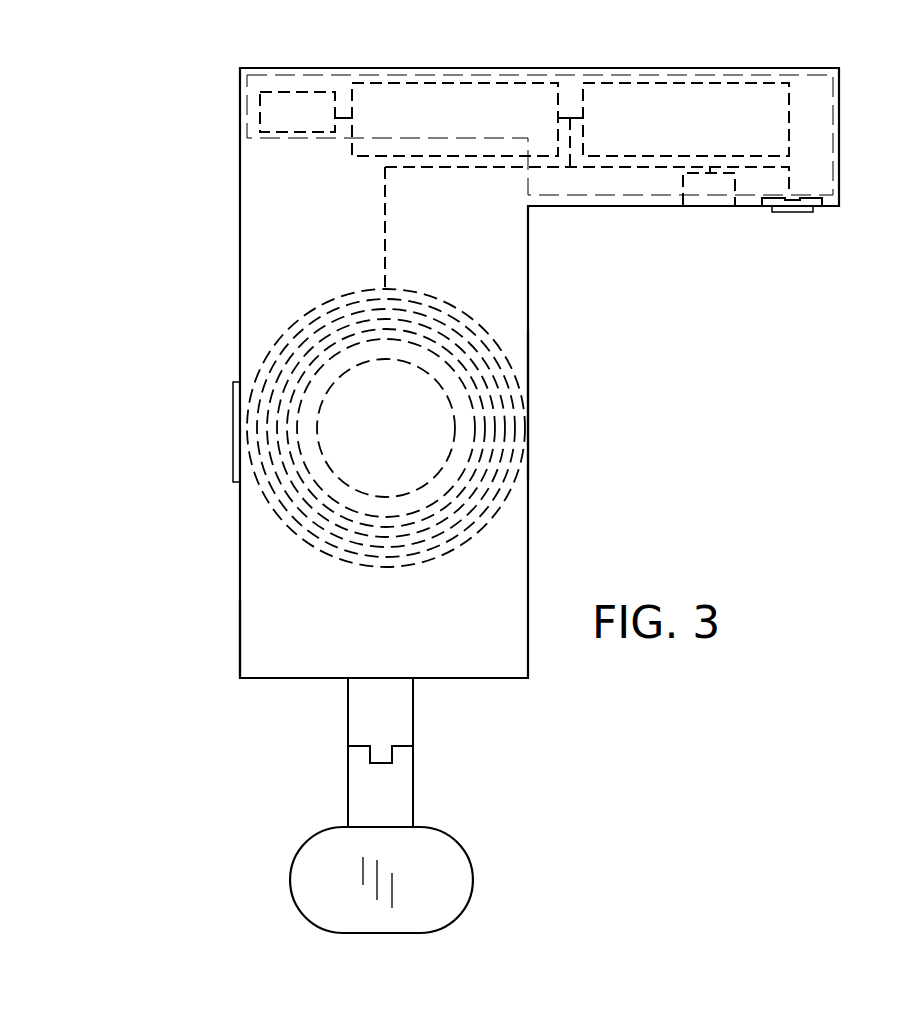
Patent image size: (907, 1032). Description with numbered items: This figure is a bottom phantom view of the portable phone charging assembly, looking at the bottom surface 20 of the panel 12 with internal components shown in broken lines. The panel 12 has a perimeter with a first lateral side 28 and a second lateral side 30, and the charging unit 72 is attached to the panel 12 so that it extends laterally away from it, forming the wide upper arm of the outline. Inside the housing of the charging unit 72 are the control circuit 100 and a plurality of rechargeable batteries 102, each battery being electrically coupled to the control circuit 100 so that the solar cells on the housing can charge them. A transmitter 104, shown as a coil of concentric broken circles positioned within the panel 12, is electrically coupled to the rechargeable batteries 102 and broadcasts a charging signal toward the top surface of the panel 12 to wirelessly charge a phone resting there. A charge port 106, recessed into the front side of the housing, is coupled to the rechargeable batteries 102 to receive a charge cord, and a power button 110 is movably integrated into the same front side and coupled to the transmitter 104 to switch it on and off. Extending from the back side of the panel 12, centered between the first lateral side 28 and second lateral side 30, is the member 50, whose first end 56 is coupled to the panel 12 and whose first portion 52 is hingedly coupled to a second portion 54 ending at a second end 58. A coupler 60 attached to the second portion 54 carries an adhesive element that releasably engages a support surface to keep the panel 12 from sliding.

The panel 12 is at (240, 678).
The bottom surface 20 is at (498, 575).
The first lateral side 28 is at (530, 402).
The second lateral side 30 is at (240, 352).
The member 50 is at (340, 748).
The first portion 52 is at (410, 712).
The second portion 54 is at (413, 797).
The first end 56 is at (348, 678).
The second end 58 is at (368, 828).
The coupler 60 is at (448, 872).
The charging unit 72 is at (777, 62).
The control circuit 100 is at (258, 113).
The rechargeable batteries 102 is at (508, 82).
The transmitter 104 is at (310, 315).
The charge port 106 is at (683, 176).
The power button 110 is at (783, 212).